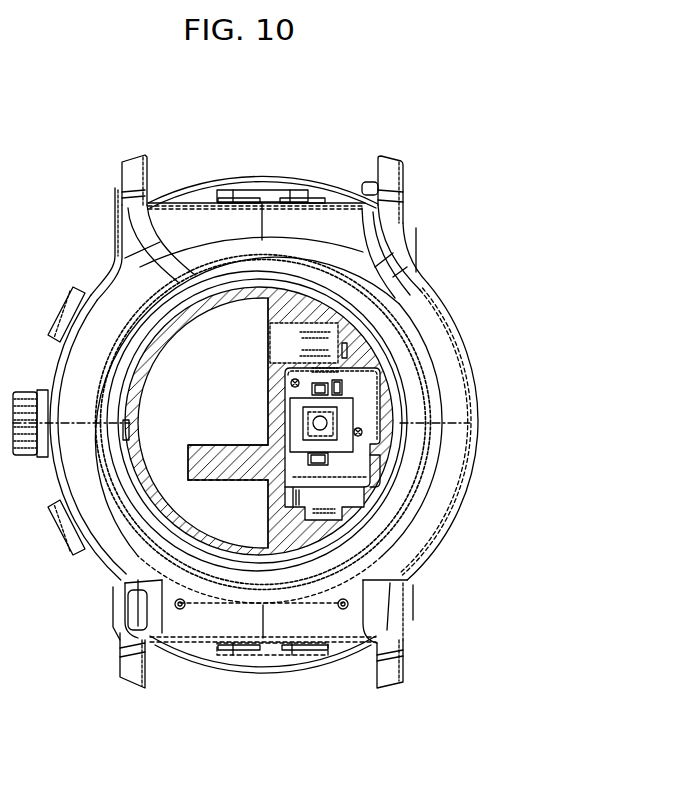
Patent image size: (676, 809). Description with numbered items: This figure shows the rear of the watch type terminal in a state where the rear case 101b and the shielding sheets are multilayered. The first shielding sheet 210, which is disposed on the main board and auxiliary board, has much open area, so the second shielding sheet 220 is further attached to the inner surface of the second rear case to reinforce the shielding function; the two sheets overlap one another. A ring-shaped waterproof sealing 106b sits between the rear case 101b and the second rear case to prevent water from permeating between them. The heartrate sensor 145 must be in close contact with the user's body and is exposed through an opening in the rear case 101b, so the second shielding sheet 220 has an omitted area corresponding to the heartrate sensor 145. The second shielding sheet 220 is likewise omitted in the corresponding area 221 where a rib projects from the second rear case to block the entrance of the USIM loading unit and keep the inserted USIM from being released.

The rear case 101b is at (416, 272).
The waterproof sealing 106b is at (400, 320).
The heartrate sensor 145 is at (362, 413).
The first shielding sheet 210 is at (302, 538).
The second shielding sheet 220 is at (182, 500).
The corresponding area 221 is at (245, 450).